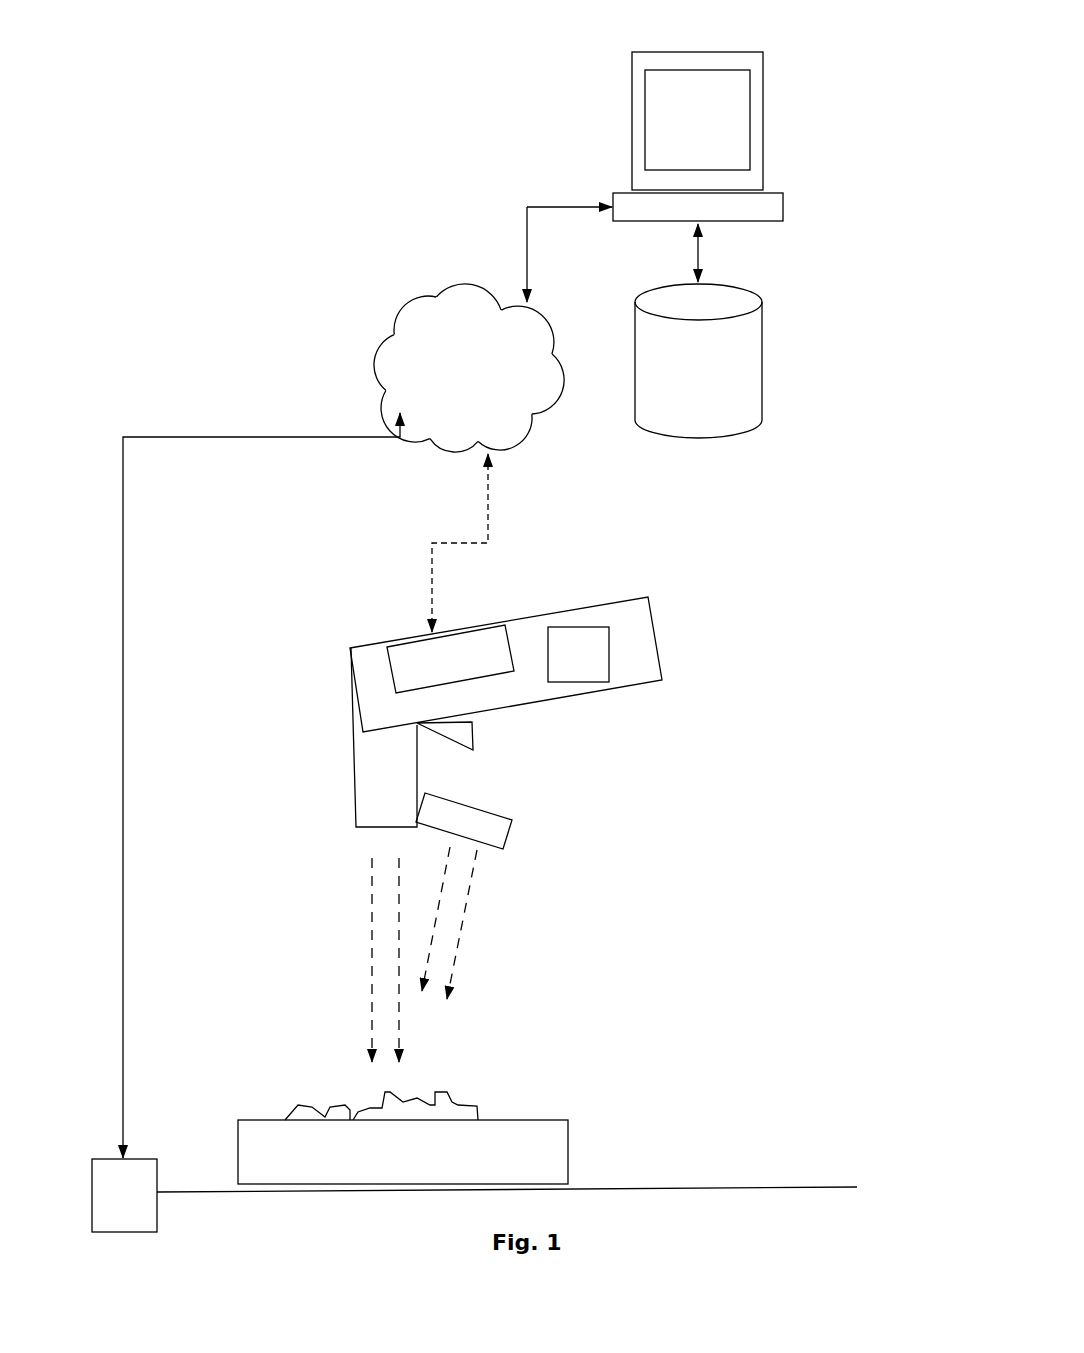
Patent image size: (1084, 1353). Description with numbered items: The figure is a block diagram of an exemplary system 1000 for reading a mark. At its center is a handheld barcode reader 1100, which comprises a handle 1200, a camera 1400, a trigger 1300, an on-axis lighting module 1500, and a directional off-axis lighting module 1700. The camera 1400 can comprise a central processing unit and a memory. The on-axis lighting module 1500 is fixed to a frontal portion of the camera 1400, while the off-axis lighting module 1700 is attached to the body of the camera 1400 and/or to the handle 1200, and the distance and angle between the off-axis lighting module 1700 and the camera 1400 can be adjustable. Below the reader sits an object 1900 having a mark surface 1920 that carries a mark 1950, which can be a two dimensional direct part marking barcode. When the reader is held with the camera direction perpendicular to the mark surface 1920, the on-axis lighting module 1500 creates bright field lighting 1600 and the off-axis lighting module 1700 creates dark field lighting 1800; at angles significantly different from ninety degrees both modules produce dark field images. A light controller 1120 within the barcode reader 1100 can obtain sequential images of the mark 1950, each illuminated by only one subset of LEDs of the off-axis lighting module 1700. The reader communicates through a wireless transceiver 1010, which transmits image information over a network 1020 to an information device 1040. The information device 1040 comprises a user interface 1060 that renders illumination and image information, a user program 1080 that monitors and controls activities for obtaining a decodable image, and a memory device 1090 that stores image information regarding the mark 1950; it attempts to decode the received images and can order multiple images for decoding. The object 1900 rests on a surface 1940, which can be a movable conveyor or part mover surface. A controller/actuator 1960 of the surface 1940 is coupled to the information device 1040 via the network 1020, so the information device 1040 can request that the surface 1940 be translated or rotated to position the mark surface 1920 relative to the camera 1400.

The system 1000 is at (208, 54).
The information device 1040 is at (698, 121).
The user interface 1060 is at (697, 120).
The user program 1080 is at (698, 122).
The network 1020 is at (469, 368).
The memory device 1090 is at (698, 361).
The wireless transceiver 1010 is at (410, 657).
The barcode reader 1100 is at (633, 581).
The handle 1200 is at (653, 617).
The light controller 1120 is at (578, 655).
The trigger 1300 is at (478, 732).
The camera 1400 is at (342, 767).
The on-axis lighting module 1500 is at (342, 827).
The directional off-axis lighting module 1700 is at (513, 835).
The bright field lighting 1600 is at (354, 948).
The dark field lighting 1800 is at (479, 917).
The object 1900 is at (312, 1086).
The mark 1950 is at (481, 1107).
The mark surface 1920 is at (541, 1114).
The surface 1940 is at (679, 1179).
The controller/actuator 1960 is at (159, 1218).